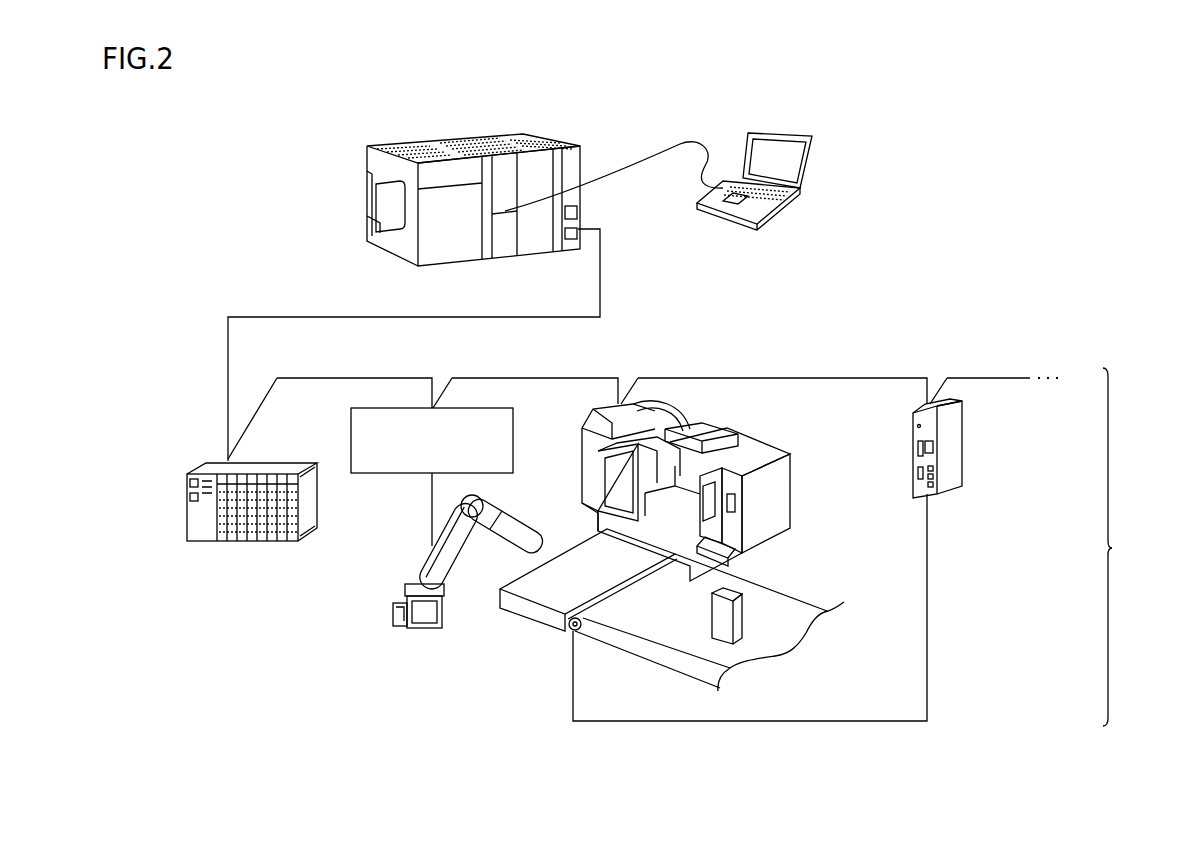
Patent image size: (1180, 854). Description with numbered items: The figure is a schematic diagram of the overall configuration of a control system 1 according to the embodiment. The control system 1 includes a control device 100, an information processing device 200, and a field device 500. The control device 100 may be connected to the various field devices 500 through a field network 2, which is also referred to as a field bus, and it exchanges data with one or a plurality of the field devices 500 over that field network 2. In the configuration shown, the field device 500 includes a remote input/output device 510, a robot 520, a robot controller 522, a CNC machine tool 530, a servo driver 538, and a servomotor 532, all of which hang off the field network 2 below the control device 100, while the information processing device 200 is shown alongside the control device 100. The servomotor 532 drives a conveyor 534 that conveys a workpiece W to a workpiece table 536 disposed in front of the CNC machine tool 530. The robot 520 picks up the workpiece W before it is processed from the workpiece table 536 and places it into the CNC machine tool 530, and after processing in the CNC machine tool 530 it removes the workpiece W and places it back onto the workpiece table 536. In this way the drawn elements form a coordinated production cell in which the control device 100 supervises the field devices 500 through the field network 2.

The control system 1 is at (1085, 81).
The field network 2 is at (445, 318).
The control device 100 is at (614, 129).
The information processing device 200 is at (813, 157).
The field device 500 is at (1127, 547).
The remote input/output (I/O) device 510 is at (245, 540).
The robot 520 is at (423, 630).
The robot controller 522 is at (480, 397).
The CNC machine tool 530 is at (762, 455).
The servomotor 532 is at (562, 631).
The conveyor 534 is at (795, 608).
The workpiece table 536 is at (537, 592).
The servo driver 538 is at (913, 466).
The workpiece W is at (712, 612).